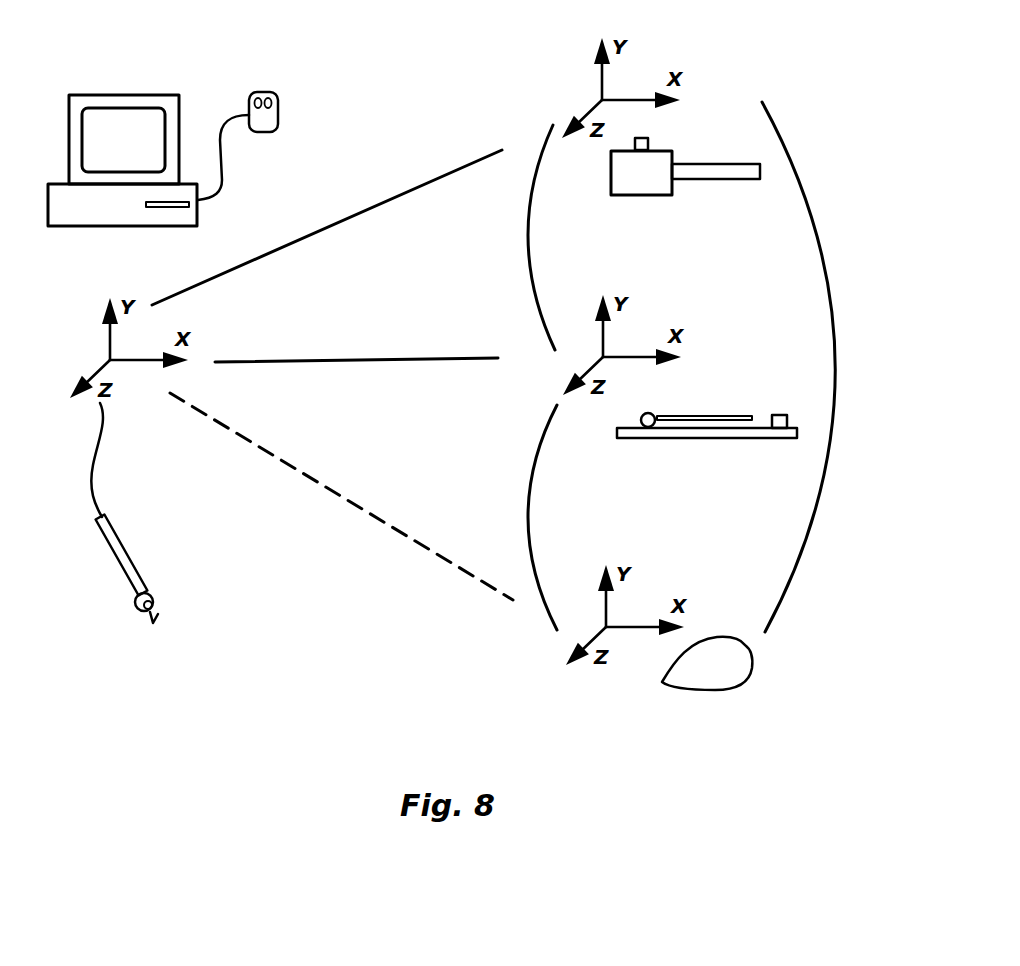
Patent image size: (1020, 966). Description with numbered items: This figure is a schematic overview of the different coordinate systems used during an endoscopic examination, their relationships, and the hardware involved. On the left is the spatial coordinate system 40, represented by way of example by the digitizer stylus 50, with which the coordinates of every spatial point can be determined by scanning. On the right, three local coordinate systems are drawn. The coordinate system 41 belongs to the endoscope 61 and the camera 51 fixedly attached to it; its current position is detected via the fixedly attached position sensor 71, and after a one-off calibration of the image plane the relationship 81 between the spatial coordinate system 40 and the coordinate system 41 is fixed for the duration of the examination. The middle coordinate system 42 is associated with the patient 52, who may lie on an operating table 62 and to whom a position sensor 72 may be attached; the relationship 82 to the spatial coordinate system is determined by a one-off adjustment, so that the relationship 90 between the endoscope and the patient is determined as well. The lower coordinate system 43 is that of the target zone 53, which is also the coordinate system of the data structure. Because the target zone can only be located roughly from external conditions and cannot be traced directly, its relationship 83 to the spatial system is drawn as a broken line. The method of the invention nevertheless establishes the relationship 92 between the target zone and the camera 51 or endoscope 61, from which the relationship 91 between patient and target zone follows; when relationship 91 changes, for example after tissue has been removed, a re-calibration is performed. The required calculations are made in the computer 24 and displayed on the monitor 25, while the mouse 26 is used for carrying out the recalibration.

The computer 24 is at (92, 213).
The monitor 25 is at (118, 118).
The mouse 26 is at (268, 120).
The spatial coordinate system 40 is at (108, 340).
The coordinate system 41 is at (600, 83).
The local coordinate system of second object 42 is at (607, 340).
The local coordinate system of third object 43 is at (630, 627).
The digitizer stylus 50 is at (120, 573).
The camera 51 is at (642, 183).
The patient 52 is at (637, 420).
The target zone 53 is at (738, 673).
The endoscope 61 is at (708, 180).
The operating table 62 is at (723, 438).
The position sensor 71 is at (653, 142).
The position sensor 72 is at (777, 415).
The relationship 81 is at (400, 190).
The relationship 82 is at (380, 358).
The relationship 83 is at (388, 528).
The relationship 90 is at (528, 263).
The relationship 91 is at (530, 495).
The relationship 92 is at (823, 517).